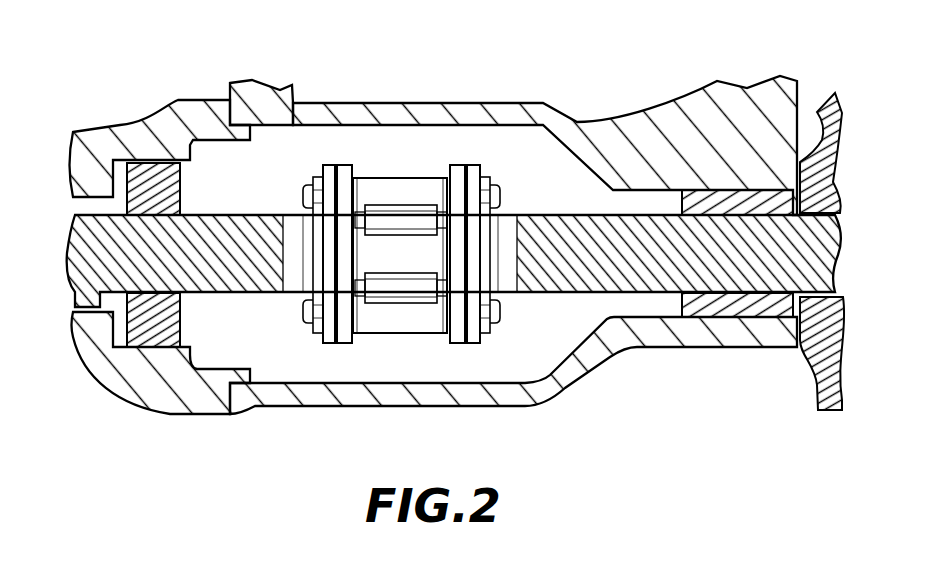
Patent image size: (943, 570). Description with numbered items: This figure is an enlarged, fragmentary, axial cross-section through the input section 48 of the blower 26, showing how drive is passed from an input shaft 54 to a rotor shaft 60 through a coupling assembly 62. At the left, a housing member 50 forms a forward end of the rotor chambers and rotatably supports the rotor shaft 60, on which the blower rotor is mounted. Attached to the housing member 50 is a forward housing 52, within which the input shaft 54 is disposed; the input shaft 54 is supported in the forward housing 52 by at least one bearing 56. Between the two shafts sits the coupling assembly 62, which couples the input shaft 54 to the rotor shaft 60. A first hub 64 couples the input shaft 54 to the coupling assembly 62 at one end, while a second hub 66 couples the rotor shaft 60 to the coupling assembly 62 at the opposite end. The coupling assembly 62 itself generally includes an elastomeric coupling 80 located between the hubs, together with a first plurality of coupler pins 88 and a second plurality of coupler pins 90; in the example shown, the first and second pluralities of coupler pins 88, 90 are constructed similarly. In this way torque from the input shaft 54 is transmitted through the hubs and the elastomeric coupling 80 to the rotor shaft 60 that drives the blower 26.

The blower 26 is at (755, 60).
The input section 48 is at (158, 96).
The housing member 50 is at (123, 137).
The forward housing 52 is at (628, 147).
The input shaft 54 is at (643, 250).
The bearing 56 is at (738, 303).
The rotor shaft 60 is at (113, 256).
The coupling assembly 62 is at (430, 150).
The first hub 64 is at (476, 180).
The second hub 66 is at (325, 188).
The elastomeric coupling 80 is at (402, 187).
The first plurality of coupler pins 88 is at (500, 197).
The second plurality of coupler pins 90 is at (308, 197).